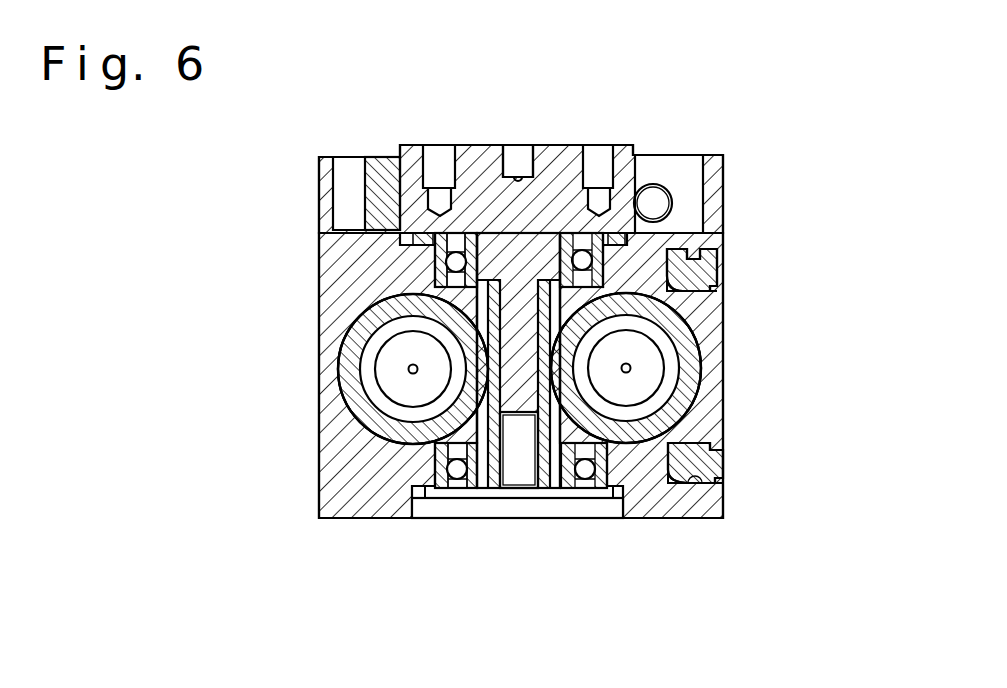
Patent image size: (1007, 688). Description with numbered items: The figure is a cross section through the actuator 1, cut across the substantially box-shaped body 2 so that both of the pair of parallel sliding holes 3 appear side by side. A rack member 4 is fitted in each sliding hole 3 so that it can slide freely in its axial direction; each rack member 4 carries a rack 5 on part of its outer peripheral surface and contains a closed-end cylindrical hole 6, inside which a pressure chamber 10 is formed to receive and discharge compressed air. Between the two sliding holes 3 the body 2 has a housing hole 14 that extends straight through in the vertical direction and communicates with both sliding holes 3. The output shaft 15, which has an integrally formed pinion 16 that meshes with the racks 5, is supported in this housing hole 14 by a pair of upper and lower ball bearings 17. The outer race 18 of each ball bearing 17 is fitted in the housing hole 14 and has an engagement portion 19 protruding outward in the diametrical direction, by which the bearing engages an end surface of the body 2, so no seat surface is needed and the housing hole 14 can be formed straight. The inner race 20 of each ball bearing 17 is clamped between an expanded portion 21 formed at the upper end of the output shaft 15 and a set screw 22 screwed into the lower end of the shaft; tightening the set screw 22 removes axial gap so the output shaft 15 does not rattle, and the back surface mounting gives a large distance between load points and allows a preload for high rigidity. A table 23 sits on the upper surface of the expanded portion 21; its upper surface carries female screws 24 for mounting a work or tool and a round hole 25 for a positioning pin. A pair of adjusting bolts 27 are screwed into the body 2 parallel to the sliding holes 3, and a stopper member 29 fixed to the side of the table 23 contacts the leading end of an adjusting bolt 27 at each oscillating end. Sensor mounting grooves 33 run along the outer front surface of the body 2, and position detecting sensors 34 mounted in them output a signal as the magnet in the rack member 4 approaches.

The actuator 1 is at (328, 140).
The body 2 is at (640, 212).
The sliding holes 3 is at (395, 298).
The rack members 4 is at (375, 330).
The rack 5 is at (473, 484).
The closed-end cylindrical hole 6 is at (392, 377).
The pressure chamber 10 is at (408, 385).
The housing hole 14 is at (425, 290).
The output shaft 15 is at (650, 296).
The pinion 16 is at (708, 463).
The ball bearings 17 is at (584, 249).
The outer race 18 is at (455, 262).
The engagement portion 19 is at (441, 258).
The inner race 20 is at (447, 243).
The expanded portion 21 is at (520, 246).
The set screw 22 is at (517, 505).
The table 23 is at (555, 173).
The female screws 24 is at (437, 165).
The round hole 25 is at (517, 162).
The adjusting bolts 27 is at (655, 186).
The stopper member 29 is at (383, 172).
The sensor mounting grooves 33 is at (693, 250).
The position detecting sensors 34 is at (702, 268).